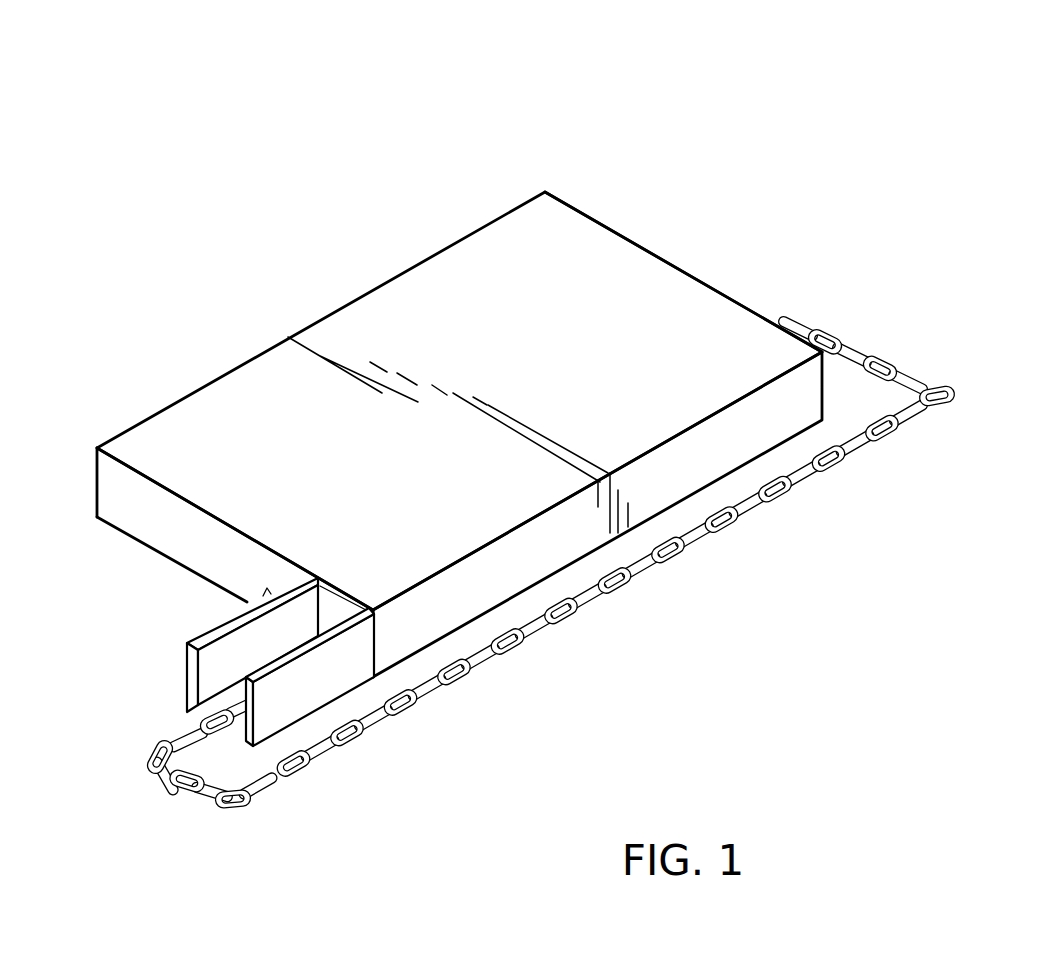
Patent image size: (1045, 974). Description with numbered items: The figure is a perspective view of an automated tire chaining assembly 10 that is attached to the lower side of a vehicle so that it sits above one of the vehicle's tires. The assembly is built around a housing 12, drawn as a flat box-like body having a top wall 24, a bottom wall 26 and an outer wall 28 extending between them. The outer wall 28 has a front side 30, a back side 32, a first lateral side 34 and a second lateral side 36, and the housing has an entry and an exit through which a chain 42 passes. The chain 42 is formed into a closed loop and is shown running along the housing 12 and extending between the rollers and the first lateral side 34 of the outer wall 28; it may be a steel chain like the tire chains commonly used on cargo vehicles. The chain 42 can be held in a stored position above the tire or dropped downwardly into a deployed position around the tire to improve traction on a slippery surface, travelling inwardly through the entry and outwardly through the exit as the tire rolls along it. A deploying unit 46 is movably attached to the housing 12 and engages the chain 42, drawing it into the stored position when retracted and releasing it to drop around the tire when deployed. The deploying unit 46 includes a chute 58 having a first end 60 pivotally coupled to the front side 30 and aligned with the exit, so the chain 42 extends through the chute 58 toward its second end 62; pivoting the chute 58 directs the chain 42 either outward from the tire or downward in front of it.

The automated tire chaining assembly 10 is at (500, 80).
The housing 12 is at (486, 250).
The top wall 24 is at (317, 360).
The bottom wall 26 is at (536, 585).
The outer wall 28 is at (775, 432).
The front side 30 is at (161, 537).
The back side 32 is at (718, 290).
The first lateral side 34 is at (640, 482).
The second lateral side 36 is at (97, 471).
The chain 42 is at (348, 752).
The deploying unit 46 is at (168, 656).
The chute 58 is at (283, 737).
The first end 60 is at (373, 650).
The second end 62 is at (240, 755).